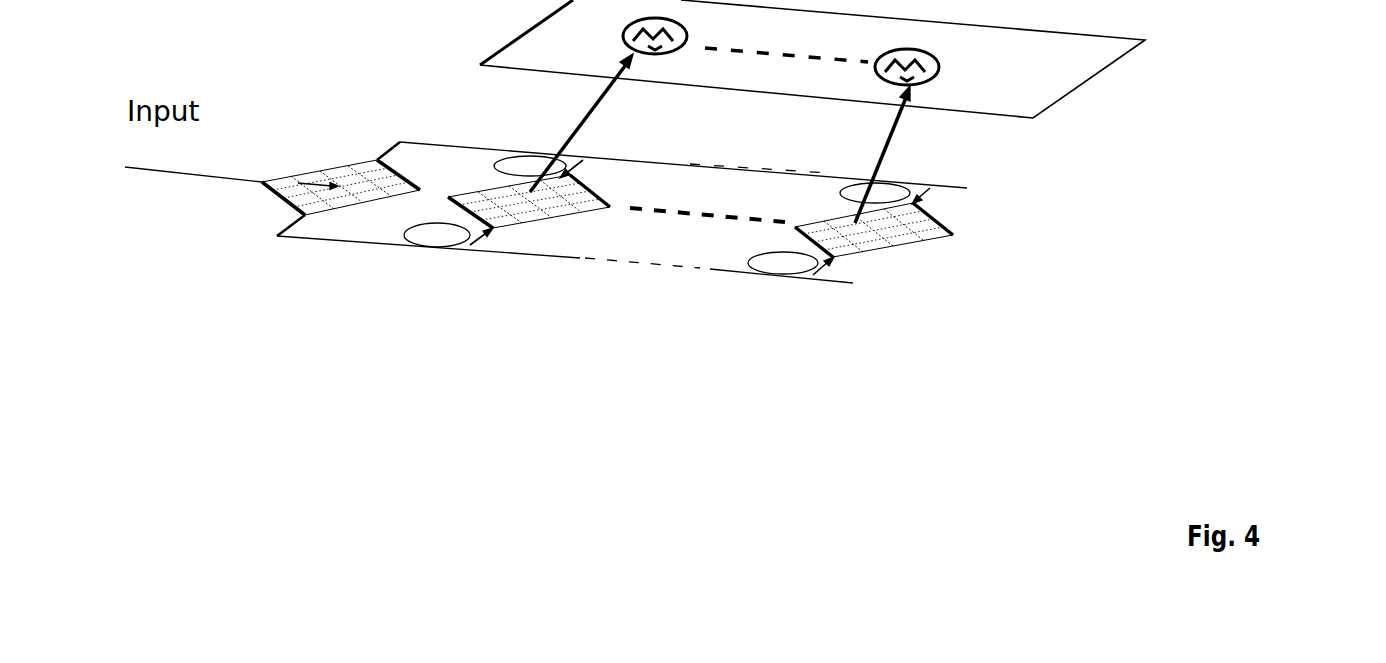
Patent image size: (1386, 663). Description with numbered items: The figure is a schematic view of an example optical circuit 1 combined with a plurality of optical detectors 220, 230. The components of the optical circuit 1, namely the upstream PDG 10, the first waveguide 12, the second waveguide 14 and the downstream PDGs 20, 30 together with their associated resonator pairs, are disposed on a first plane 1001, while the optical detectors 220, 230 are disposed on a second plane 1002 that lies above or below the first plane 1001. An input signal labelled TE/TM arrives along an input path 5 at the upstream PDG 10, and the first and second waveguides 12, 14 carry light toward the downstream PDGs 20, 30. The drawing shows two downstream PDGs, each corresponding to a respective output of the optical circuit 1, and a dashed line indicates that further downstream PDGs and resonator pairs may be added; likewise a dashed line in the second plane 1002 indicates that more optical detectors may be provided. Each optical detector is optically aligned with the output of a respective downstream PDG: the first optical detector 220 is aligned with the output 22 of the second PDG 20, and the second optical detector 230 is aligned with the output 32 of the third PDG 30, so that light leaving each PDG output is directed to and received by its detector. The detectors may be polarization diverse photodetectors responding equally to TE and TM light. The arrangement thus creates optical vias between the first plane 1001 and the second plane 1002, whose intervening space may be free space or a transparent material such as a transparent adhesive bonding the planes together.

The optical circuit 1 is at (697, 302).
The input waveguide 5 is at (225, 173).
The upstream PDG 10 is at (350, 162).
The first waveguide 12 is at (430, 144).
The second waveguide 14 is at (372, 245).
The downstream PDG 20 is at (543, 213).
The output of the second PDG 22 is at (573, 125).
The downstream PDG 30 is at (877, 245).
The second vertical coupler 32 is at (883, 157).
The first optical detector 220 is at (627, 34).
The second optical detector 230 is at (940, 64).
The first plane 1001 is at (1151, 274).
The second plane 1002 is at (912, 74).